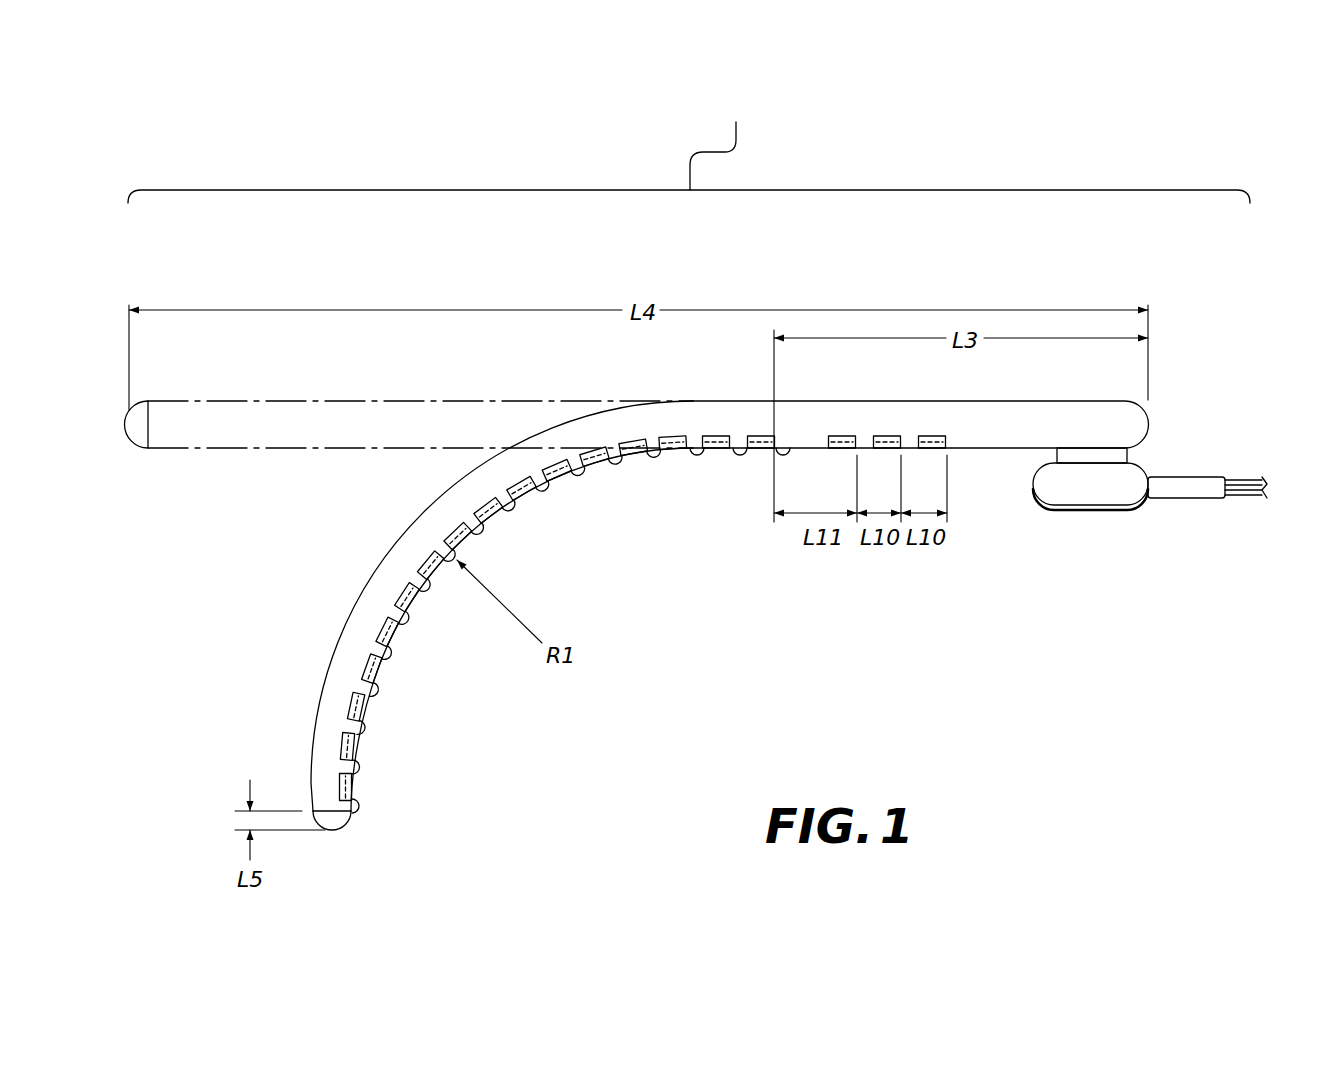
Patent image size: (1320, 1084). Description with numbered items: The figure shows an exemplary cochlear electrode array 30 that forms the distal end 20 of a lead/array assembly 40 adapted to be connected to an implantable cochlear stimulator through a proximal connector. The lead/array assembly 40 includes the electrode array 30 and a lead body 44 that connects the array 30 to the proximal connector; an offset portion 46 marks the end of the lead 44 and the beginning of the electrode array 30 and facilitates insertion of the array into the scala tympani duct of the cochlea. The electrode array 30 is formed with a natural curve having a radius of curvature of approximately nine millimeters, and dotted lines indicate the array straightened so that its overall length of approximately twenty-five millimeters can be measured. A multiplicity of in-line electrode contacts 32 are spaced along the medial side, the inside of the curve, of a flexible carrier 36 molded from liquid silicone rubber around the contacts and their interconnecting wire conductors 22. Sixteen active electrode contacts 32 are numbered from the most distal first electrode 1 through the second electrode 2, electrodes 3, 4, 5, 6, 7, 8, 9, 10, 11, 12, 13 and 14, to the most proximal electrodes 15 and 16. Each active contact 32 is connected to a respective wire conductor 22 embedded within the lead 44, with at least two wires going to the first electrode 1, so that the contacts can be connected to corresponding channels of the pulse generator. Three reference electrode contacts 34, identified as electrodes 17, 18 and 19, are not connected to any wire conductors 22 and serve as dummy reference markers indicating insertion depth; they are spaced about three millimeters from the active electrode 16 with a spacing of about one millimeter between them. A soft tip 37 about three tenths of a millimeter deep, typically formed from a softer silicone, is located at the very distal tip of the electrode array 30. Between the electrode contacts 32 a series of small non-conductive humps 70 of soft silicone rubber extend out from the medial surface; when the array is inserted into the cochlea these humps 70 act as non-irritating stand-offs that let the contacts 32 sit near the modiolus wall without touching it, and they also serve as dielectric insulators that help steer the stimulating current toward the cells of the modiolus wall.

The distal end 20 is at (410, 831).
The electrode array 30 is at (484, 293).
The flexible carrier 36 is at (400, 560).
The soft tip 37 is at (333, 830).
The electrode contacts 32 is at (495, 522).
The reference electrode contacts 34 is at (842, 436).
The humps 70 is at (545, 486).
The lead/array assembly 40 is at (689, 149).
The lead body 44 is at (1190, 498).
The offset portion 46 is at (1127, 455).
The wire conductors 22 is at (1258, 492).
The first electrode 1 is at (345, 795).
The second electrode 2 is at (349, 755).
The third electrode 3 is at (355, 706).
The fourth electrode 4 is at (372, 668).
The fifth electrode 5 is at (387, 632).
The sixth electrode 6 is at (407, 597).
The seventh electrode 7 is at (430, 565).
The eighth electrode 8 is at (458, 535).
The ninth electrode 9 is at (488, 510).
The tenth electrode 10 is at (521, 488).
The eleventh electrode 11 is at (557, 470).
The twelfth electrode 12 is at (594, 456).
The thirteenth electrode 13 is at (633, 447).
The fourteenth electrode 14 is at (673, 443).
The fifteenth electrode 15 is at (718, 458).
The active electrode 16 is at (762, 458).
The reference marker electrode 17 is at (841, 458).
The reference marker electrode 18 is at (886, 458).
The reference marker electrode 19 is at (931, 458).